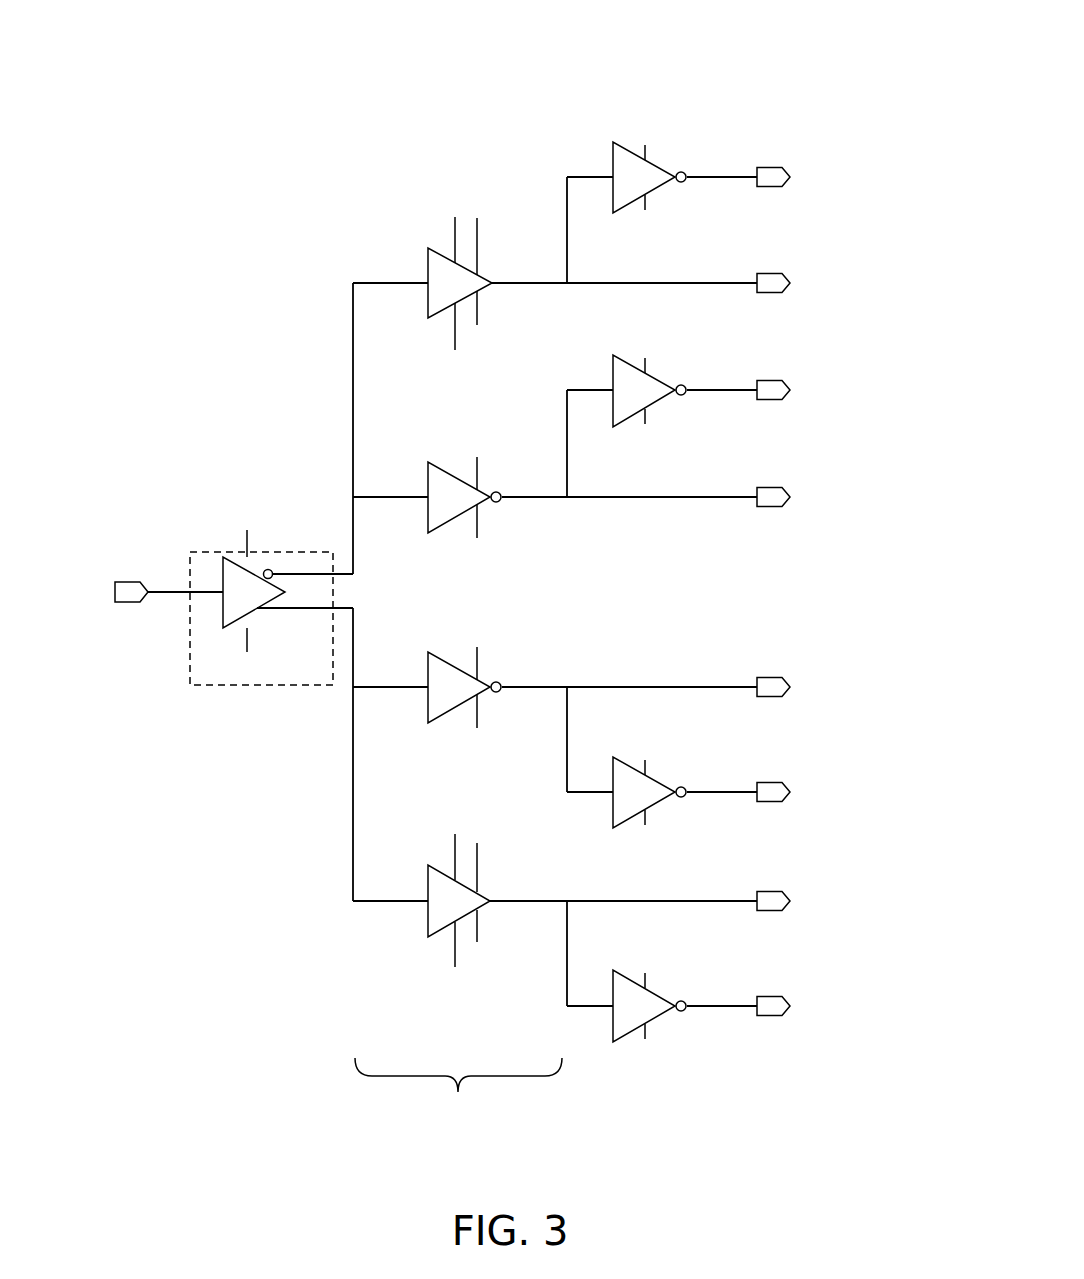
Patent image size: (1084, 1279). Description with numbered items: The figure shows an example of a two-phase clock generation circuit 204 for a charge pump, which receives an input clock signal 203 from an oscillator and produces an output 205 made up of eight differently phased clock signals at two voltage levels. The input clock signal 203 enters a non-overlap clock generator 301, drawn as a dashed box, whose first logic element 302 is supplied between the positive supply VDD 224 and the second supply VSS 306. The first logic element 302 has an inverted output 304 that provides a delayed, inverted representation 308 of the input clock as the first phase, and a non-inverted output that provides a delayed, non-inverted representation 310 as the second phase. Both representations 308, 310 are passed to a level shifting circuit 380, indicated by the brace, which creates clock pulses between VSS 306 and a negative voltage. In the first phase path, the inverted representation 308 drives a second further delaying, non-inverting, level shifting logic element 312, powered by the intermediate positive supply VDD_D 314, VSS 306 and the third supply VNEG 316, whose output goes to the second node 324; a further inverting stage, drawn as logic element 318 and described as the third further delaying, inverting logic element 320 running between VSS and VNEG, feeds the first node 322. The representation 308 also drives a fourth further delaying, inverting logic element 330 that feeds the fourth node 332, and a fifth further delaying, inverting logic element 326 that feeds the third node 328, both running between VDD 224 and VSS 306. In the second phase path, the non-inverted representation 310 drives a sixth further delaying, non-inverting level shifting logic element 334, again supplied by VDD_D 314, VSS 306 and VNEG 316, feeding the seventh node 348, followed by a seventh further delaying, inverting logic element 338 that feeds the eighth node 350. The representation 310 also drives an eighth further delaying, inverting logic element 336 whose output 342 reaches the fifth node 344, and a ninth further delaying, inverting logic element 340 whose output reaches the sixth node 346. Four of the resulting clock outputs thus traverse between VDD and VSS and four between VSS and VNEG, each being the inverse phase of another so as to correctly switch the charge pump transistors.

The input clock signal 203 is at (152, 598).
The 2-phase clock generation circuit 204 is at (282, 98).
The 2-phase clock signal output 205 is at (838, 88).
The positive supply VDD 224 is at (245, 552).
The non-overlap clock generator 301 is at (238, 614).
The first logic element 302 is at (223, 572).
The inverted output 304 is at (273, 570).
The second supply VSS 306 is at (250, 635).
The delayed, inverted representation 308 is at (353, 340).
The delayed, non-inverted representation 310 is at (353, 843).
The second further delaying, non-inverting, level shifting logic element 312 is at (473, 235).
The positive supply VDD_D 314 is at (450, 172).
The third supply VNEG 316 is at (477, 310).
The inverter 318 is at (629, 178).
The third further delaying, inverting logic element 320 is at (660, 190).
The first node 322 is at (768, 167).
The second node 324 is at (768, 273).
The fifth further delaying, inverting logic element 326 is at (665, 402).
The third node 328 is at (768, 380).
The fourth further delaying, inverting logic element 330 is at (428, 485).
The fourth node 332 is at (768, 487).
The sixth further delaying, non-inverting level shifting logic element 334 is at (428, 915).
The eighth further delaying, inverting logic element 336 is at (428, 700).
The seventh further delaying, inverting logic element 338 is at (658, 992).
The ninth further delaying, inverting logic element 340 is at (658, 778).
The output 342 is at (552, 687).
The fifth node 344 is at (768, 697).
The sixth node 346 is at (768, 802).
The seventh node 348 is at (768, 911).
The eighth node 350 is at (768, 1016).
The level shifting circuit 380 is at (458, 1093).